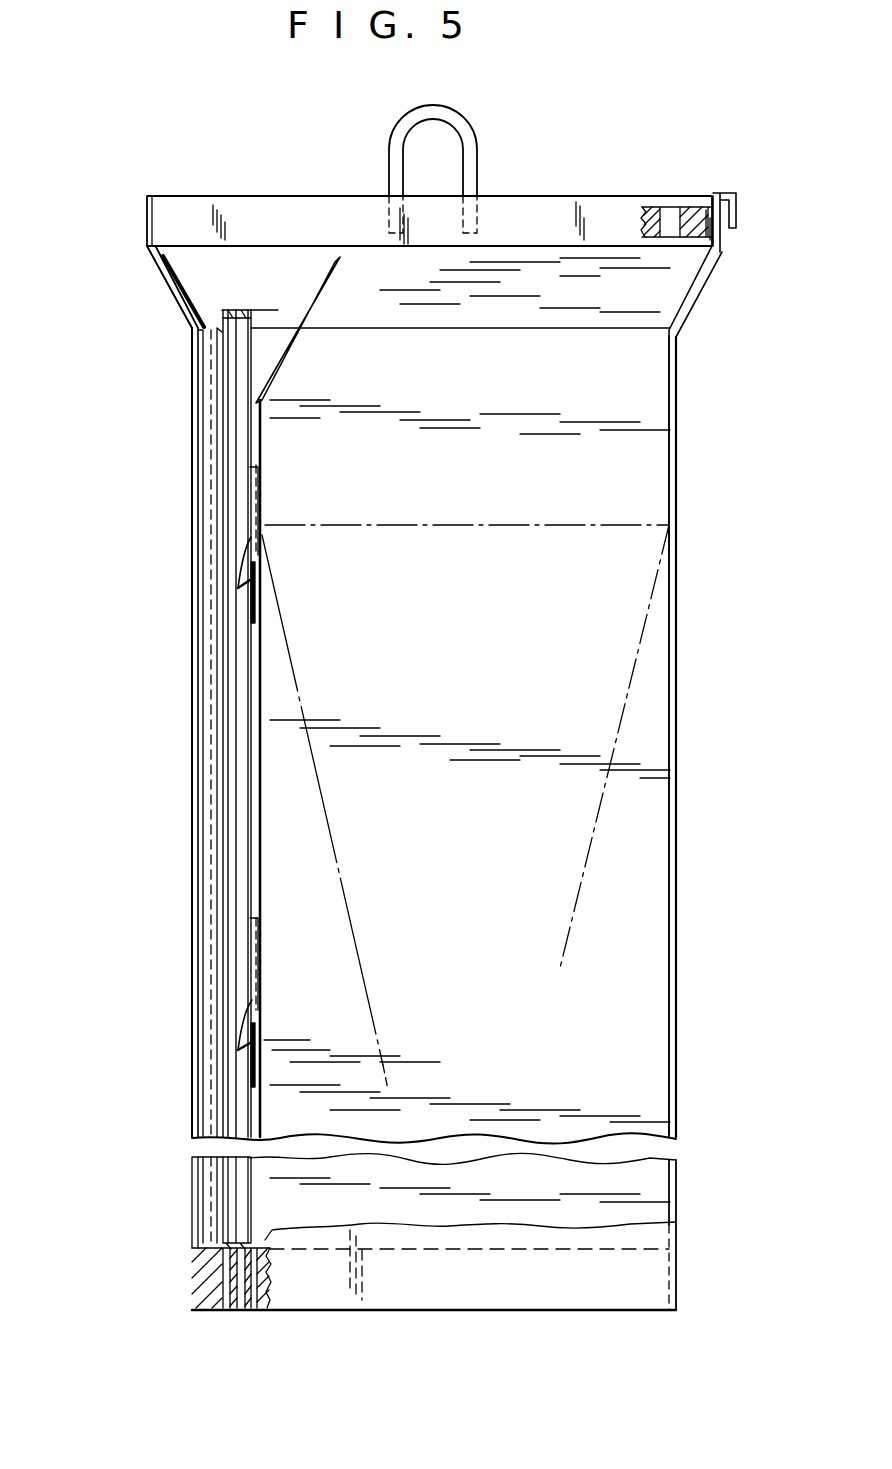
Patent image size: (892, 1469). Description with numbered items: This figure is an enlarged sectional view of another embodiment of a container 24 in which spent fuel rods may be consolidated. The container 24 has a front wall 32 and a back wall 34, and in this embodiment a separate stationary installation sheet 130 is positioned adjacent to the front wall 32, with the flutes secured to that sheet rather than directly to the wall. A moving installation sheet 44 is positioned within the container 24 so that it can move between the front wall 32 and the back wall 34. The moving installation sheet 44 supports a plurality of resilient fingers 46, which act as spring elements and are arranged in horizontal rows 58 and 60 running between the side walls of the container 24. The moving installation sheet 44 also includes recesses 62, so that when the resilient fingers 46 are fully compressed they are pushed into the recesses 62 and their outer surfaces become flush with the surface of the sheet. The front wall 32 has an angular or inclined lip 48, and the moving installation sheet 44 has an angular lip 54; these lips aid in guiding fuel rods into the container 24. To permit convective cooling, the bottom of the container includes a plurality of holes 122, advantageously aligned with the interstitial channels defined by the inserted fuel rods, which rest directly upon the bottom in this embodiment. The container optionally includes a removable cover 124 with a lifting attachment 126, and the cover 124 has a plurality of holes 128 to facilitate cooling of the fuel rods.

The container 24 is at (700, 494).
The front wall 32 is at (199, 450).
The back wall 34 is at (678, 614).
The moving installation sheet 44 is at (263, 432).
The resilient fingers 46 is at (241, 585).
The angular lip 48 is at (176, 304).
The angular lip 54 is at (328, 302).
The horizontal row 58 is at (275, 546).
The horizontal row 60 is at (319, 948).
The recesses 62 is at (255, 612).
The holes 122 is at (266, 1342).
The removable cover 124 is at (728, 193).
The lifting attachment 126 is at (466, 132).
The holes 128 is at (664, 210).
The stationary installation sheet 130 is at (194, 283).